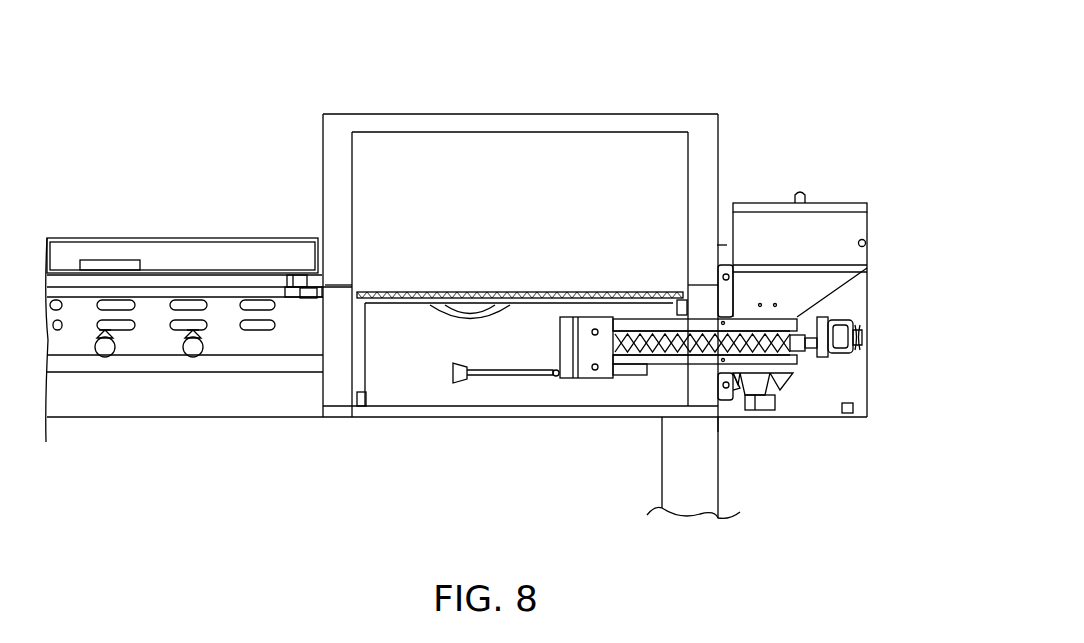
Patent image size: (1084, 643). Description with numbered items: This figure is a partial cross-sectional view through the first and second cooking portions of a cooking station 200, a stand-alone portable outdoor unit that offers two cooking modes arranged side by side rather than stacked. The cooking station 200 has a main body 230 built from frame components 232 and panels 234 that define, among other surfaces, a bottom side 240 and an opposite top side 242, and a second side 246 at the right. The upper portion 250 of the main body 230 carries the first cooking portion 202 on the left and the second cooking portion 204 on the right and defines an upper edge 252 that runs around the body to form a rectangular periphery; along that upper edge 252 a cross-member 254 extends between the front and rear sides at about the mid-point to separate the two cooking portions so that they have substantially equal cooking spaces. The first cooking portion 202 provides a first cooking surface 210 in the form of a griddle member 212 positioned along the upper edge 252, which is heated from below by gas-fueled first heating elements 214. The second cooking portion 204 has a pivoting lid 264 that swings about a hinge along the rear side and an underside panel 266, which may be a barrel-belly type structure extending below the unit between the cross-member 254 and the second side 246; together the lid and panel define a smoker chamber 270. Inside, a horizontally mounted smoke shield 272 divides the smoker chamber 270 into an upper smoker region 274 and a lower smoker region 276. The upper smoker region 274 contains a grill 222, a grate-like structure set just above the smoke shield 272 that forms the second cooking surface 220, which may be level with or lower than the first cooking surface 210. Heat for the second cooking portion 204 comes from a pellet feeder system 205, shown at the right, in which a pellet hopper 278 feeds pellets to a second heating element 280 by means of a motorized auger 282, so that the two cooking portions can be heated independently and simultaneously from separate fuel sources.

The cooking station 200 is at (856, 117).
The first cooking portion 202 is at (172, 187).
The second cooking portion 204 is at (541, 99).
The pellet feeder system 205 is at (874, 297).
The first cooking surface 210 is at (68, 265).
The griddle member 212 is at (118, 238).
The first heating elements 214 is at (122, 357).
The second cooking surface 220 is at (596, 290).
The grill 222 is at (555, 292).
The main body 230 is at (250, 419).
The frame components 232 is at (240, 290).
The panels 234 is at (223, 343).
The bottom side 240 is at (358, 469).
The top side 242 is at (287, 119).
The second side 246 is at (906, 222).
The upper portion 250 is at (308, 419).
The upper edge 252 is at (187, 297).
The cross-member 254 is at (288, 288).
The pivoting lid 264 is at (721, 154).
The underside panel 266 is at (493, 418).
The smoker chamber 270 is at (502, 199).
The smoke shield 272 is at (382, 292).
The upper smoker region 274 is at (352, 192).
The lower smoker region 276 is at (352, 357).
The pellet hopper 278 is at (866, 243).
The second heating element 280 is at (612, 366).
The auger 282 is at (673, 355).